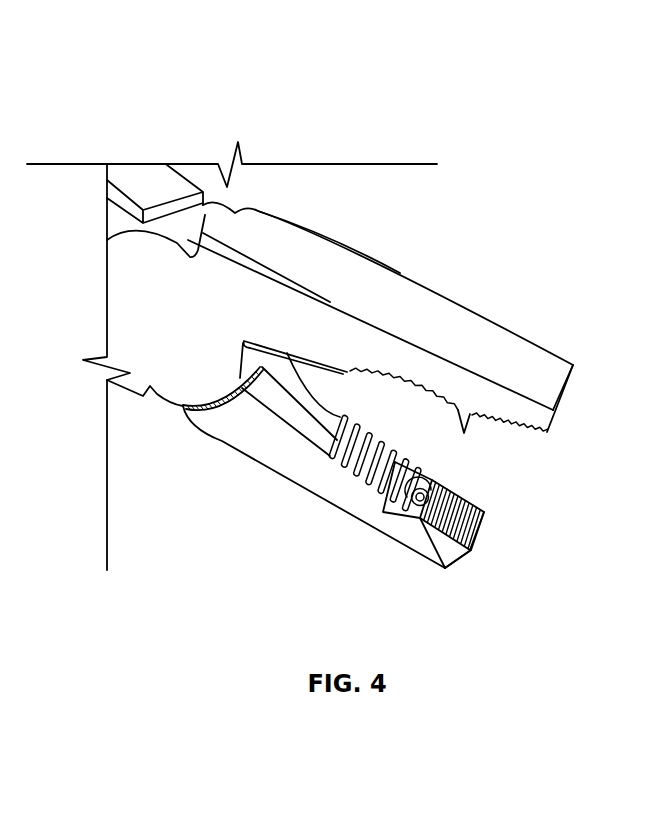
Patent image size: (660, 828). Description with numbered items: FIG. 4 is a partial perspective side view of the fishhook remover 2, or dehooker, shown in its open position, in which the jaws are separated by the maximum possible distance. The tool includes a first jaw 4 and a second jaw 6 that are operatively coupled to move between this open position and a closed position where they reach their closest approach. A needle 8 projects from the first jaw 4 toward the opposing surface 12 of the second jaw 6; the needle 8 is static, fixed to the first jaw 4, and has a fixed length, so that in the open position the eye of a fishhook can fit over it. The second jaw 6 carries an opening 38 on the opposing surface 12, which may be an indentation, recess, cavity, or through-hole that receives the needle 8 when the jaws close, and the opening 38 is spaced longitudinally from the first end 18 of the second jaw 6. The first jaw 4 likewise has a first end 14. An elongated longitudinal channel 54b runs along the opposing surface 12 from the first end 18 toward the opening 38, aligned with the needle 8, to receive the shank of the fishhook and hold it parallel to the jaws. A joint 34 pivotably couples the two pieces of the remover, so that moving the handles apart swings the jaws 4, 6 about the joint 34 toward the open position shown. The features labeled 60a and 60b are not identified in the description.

The fishhook remover 2 is at (522, 157).
The first jaw 4 is at (280, 322).
The second jaw 6 is at (203, 424).
The needle 8 is at (468, 434).
The opposing surface 12 is at (383, 510).
The first end 14 is at (547, 393).
The first end 18 is at (470, 551).
The joint 34 is at (179, 303).
The opening 38 is at (412, 512).
The elongated longitudinal channel 54b is at (485, 523).
The first arm 60a is at (300, 357).
The second arm 60b is at (298, 433).